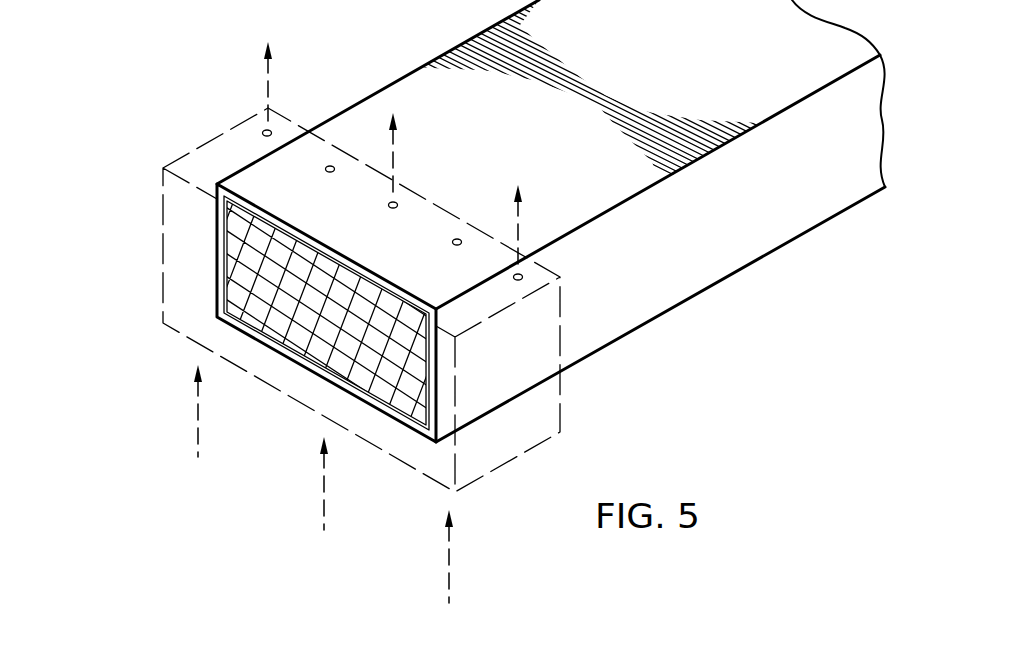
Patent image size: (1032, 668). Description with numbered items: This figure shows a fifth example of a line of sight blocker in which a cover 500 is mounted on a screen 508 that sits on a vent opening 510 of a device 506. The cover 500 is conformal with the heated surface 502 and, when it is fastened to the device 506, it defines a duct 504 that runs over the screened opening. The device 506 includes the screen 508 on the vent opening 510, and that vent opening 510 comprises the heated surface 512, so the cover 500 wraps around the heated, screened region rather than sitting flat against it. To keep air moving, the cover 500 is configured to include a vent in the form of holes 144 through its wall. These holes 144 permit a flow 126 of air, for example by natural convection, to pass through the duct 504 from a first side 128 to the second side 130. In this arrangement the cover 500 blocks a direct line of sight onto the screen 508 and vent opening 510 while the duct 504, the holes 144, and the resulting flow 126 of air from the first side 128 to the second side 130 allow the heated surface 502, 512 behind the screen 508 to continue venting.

The flow of air 126 is at (198, 418).
The first side 128 is at (509, 497).
The second side 130 is at (316, 98).
The holes 144 is at (262, 134).
The cover 500 is at (162, 203).
The heated surface 502 is at (327, 340).
The duct 504 is at (593, 397).
The device 506 is at (128, 134).
The screen 508 is at (216, 242).
The vent opening 510 is at (217, 279).
The heated surface 512 is at (218, 300).